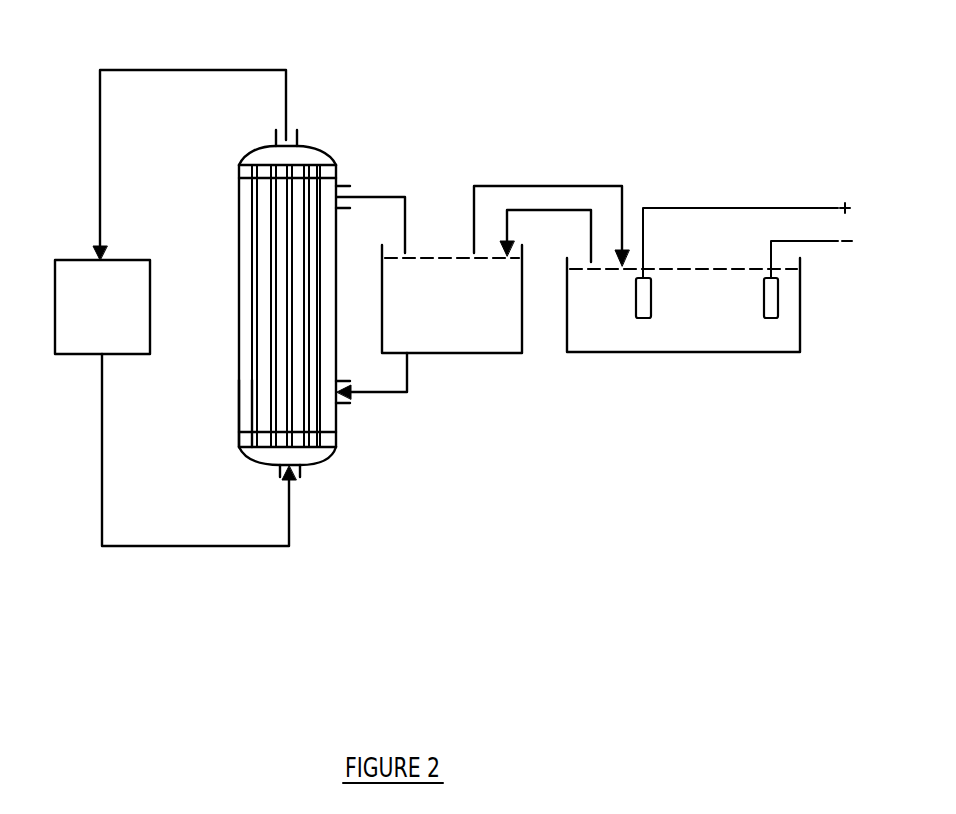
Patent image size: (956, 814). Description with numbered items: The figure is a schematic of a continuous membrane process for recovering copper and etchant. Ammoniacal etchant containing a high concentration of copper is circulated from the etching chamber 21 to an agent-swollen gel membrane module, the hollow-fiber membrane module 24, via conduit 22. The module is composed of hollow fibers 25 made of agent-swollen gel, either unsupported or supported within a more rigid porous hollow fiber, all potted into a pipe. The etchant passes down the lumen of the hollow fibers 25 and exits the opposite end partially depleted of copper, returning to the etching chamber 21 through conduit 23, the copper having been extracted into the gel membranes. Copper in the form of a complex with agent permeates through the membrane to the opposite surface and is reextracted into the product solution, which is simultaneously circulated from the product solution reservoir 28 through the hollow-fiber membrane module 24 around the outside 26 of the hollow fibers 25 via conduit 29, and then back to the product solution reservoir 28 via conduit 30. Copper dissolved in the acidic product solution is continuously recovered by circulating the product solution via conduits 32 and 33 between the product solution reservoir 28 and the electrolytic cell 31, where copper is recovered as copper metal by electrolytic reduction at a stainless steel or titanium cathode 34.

The etching chamber 21 is at (78, 343).
The conduit 22 is at (213, 548).
The conduit 23 is at (185, 67).
The hollow-fiber membrane module 24 is at (328, 147).
The hollow fibers 25 is at (257, 248).
The outside of the hollow fibers 26 is at (245, 400).
The product solution reservoir 28 is at (459, 353).
The conduit 29 is at (388, 395).
The conduit 30 is at (404, 194).
The electrolytic cell 31 is at (653, 342).
The conduit 32 is at (575, 183).
The conduit 33 is at (592, 235).
The cathode 34 is at (773, 303).